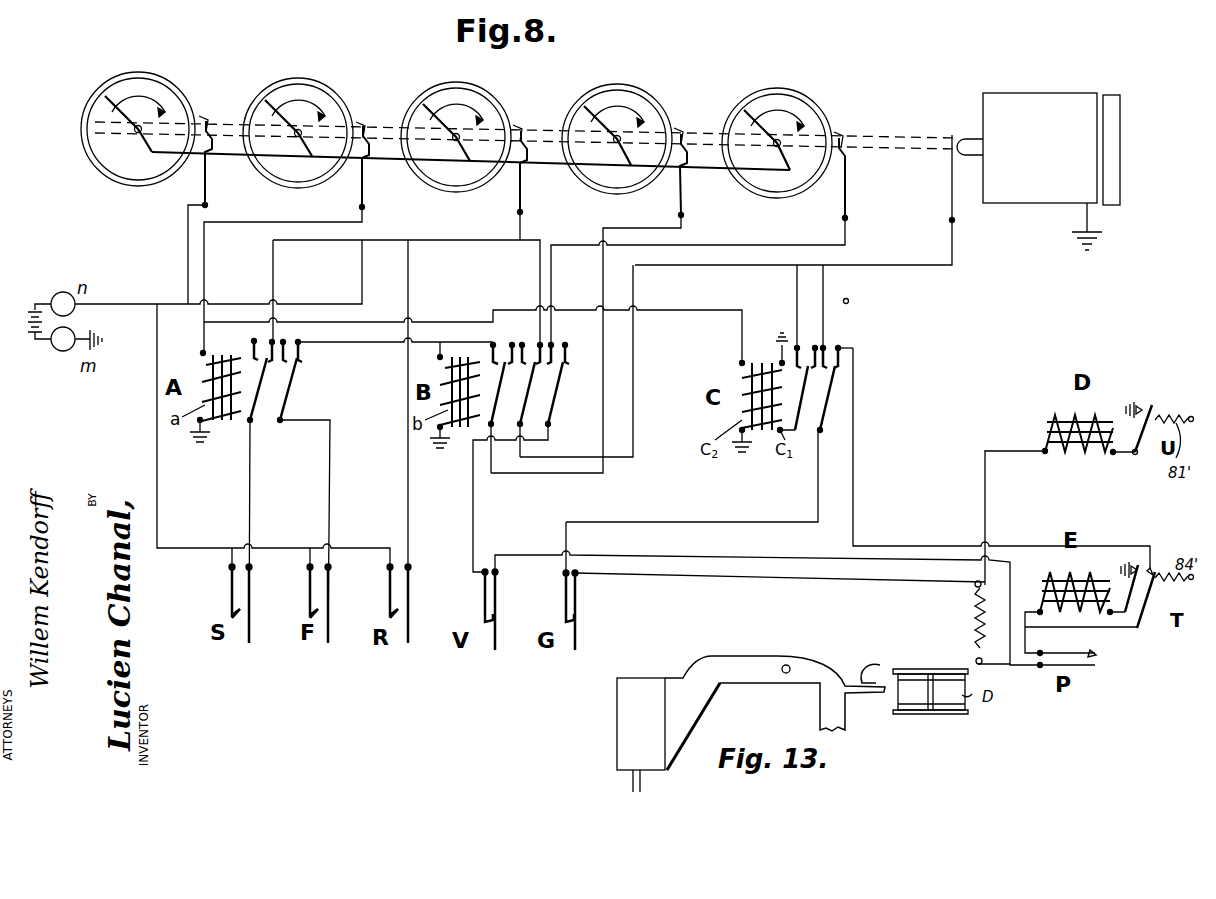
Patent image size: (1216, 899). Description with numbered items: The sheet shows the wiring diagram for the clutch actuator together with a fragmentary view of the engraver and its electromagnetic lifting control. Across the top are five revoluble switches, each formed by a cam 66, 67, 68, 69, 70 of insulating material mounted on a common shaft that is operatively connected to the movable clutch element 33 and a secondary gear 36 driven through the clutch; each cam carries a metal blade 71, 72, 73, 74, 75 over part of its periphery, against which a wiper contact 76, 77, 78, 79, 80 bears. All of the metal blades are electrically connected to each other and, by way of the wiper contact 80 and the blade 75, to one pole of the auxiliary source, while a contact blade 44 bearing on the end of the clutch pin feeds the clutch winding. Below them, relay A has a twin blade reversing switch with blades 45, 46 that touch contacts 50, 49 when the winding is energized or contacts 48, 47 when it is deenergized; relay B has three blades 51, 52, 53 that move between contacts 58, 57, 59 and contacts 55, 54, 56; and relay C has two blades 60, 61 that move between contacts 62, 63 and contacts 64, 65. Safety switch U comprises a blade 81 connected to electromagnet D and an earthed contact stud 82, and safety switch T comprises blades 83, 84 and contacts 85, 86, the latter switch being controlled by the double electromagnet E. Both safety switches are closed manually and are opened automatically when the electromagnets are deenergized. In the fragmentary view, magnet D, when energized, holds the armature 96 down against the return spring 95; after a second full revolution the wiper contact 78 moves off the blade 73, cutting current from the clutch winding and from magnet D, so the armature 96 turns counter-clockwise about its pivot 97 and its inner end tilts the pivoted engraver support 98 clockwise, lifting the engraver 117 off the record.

In FIG. 8, the clutch part 33 is at (1042, 171).
In FIG. 8, the secondary gear 36 is at (1115, 177).
In FIG. 8, the contact blade 44 is at (952, 200).
In FIG. 8, the reversing switch blade 45 is at (263, 500).
In FIG. 8, the reversing switch blade 46 is at (290, 390).
In FIG. 8, the contact 47 is at (300, 350).
In FIG. 8, the contact 48 is at (276, 340).
In FIG. 8, the contact 49 is at (283, 358).
In FIG. 8, the contact 50 is at (251, 350).
In FIG. 8, the reversing switch blade 51 is at (561, 394).
In FIG. 8, the reversing switch blade 52 is at (532, 394).
In FIG. 8, the reversing switch blade 53 is at (504, 394).
In FIG. 8, the contact 54 is at (538, 342).
In FIG. 8, the contact 55 is at (567, 352).
In FIG. 8, the contact 56 is at (510, 363).
In FIG. 8, the contact 57 is at (523, 365).
In FIG. 8, the contact 58 is at (554, 342).
In FIG. 8, the contact 59 is at (506, 346).
In FIG. 8, the reversing switch blade 60 is at (836, 392).
In FIG. 8, the reversing switch blade 61 is at (808, 398).
In FIG. 8, the contact 62 is at (853, 353).
In FIG. 8, the contact 63 is at (817, 346).
In FIG. 8, the contact 64 is at (840, 334).
In FIG. 8, the contact 65 is at (810, 337).
In FIG. 8, the cam 66 is at (762, 183).
In FIG. 8, the cam 67 is at (600, 177).
In FIG. 8, the cam 68 is at (430, 178).
In FIG. 8, the cam 69 is at (278, 173).
In FIG. 8, the cam 70 is at (115, 163).
In FIG. 8, the metal blade 71 is at (834, 134).
In FIG. 8, the metal blade 72 is at (670, 114).
In FIG. 8, the metal blade 73 is at (505, 110).
In FIG. 8, the metal blade 74 is at (320, 185).
In FIG. 8, the metal blade 75 is at (204, 120).
In FIG. 8, the wiper contact 76 is at (847, 173).
In FIG. 8, the wiper contact 77 is at (684, 170).
In FIG. 8, the wiper contact 78 is at (523, 168).
In FIG. 8, the wiper contact 79 is at (364, 168).
In FIG. 8, the wiper contact 80 is at (206, 165).
In FIG. 8, the blade 81 is at (1156, 408).
In FIG. 8, the contact stud 82 is at (1138, 404).
In FIG. 8, the blade 83 is at (1140, 592).
In FIG. 8, the blade 84 is at (1142, 612).
In FIG. 8, the contact 85 is at (1133, 564).
In FIG. 8, the contact 86 is at (1153, 566).
In FIG. 13, the return spring 95 is at (974, 624).
In FIG. 13, the armature 96 is at (925, 667).
In FIG. 13, the pivot 97 is at (883, 670).
In FIG. 13, the engraver support 98 is at (803, 664).
In FIG. 13, the engraver 117 is at (622, 710).